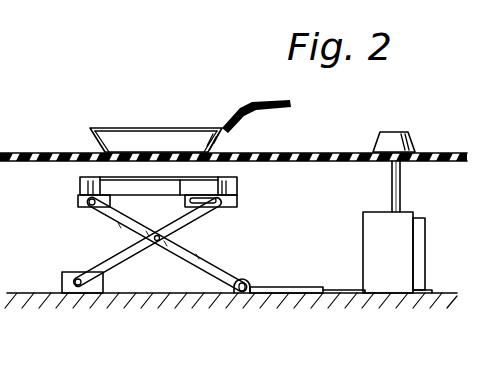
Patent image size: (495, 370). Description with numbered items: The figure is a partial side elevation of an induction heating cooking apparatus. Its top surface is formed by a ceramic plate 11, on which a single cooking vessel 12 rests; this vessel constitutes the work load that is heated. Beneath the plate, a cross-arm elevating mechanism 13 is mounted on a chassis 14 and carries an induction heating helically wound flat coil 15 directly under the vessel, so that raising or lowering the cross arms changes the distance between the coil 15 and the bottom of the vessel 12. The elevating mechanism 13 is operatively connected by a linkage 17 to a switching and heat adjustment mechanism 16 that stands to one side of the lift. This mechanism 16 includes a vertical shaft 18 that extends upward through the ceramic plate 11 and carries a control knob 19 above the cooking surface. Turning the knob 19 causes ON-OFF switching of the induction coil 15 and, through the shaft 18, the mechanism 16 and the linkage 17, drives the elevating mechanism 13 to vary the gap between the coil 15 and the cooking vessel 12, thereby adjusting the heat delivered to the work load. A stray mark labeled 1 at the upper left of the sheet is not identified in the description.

The apparatus 1 is at (17, 60).
The ceramic plate 11 is at (28, 152).
The cooking vessel 12 is at (158, 128).
The cross-arm elevating mechanism 13 is at (57, 199).
The chassis 14 is at (33, 292).
The induction heating helically wound flat coil 15 is at (193, 181).
The switching and heat adjustment mechanism 16 is at (467, 228).
The linkage 17 is at (292, 287).
The vertical shaft 18 is at (401, 184).
The control knob 19 is at (396, 131).